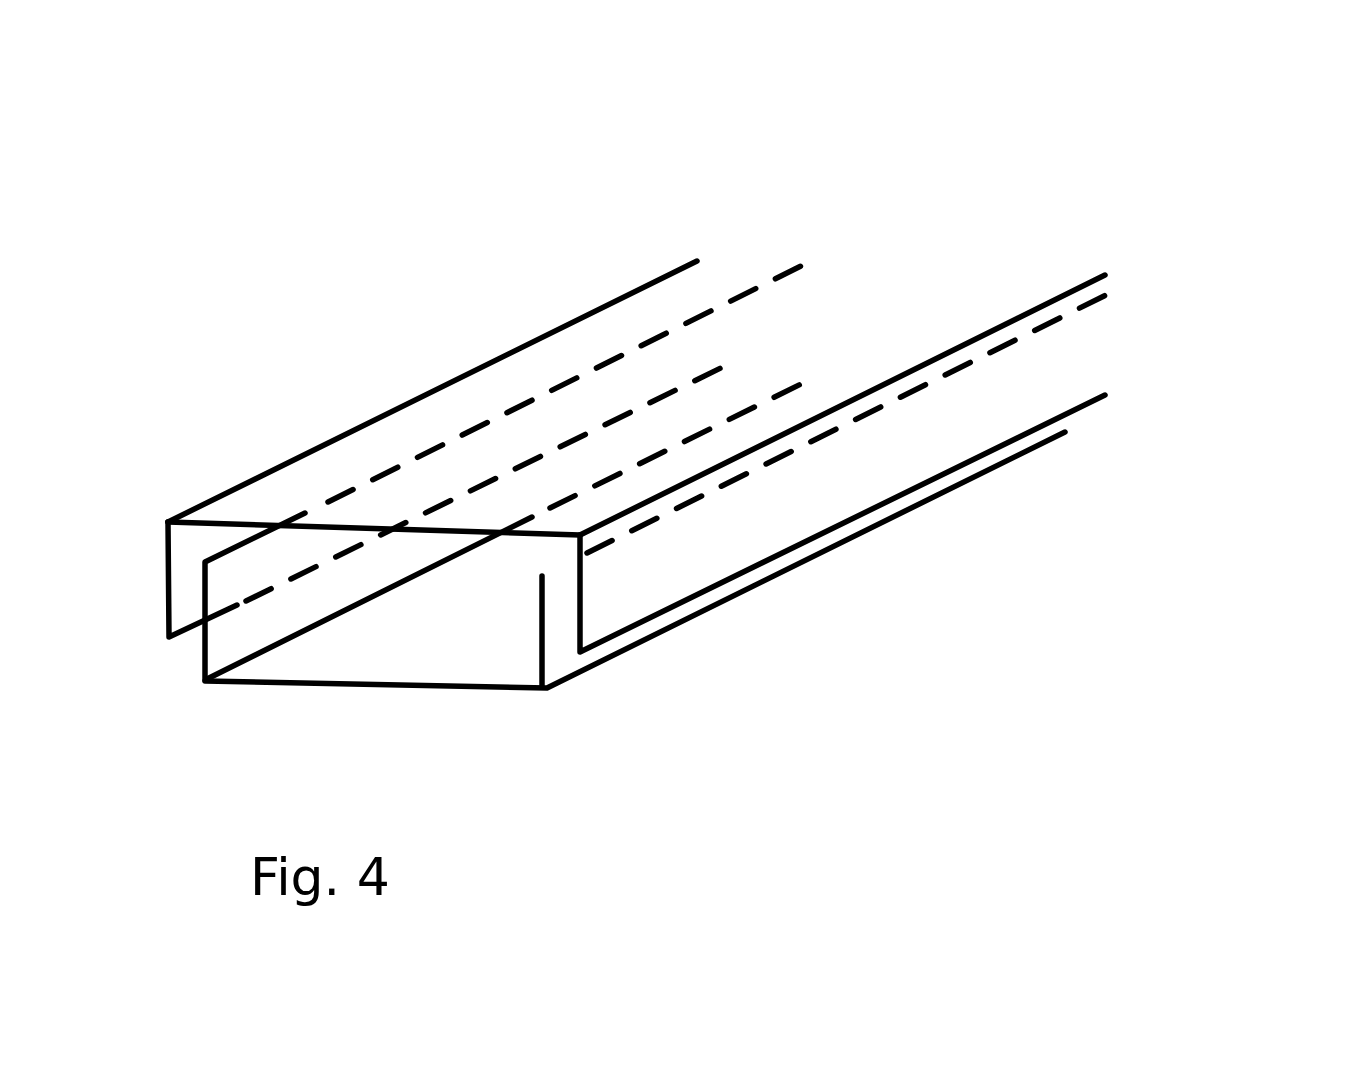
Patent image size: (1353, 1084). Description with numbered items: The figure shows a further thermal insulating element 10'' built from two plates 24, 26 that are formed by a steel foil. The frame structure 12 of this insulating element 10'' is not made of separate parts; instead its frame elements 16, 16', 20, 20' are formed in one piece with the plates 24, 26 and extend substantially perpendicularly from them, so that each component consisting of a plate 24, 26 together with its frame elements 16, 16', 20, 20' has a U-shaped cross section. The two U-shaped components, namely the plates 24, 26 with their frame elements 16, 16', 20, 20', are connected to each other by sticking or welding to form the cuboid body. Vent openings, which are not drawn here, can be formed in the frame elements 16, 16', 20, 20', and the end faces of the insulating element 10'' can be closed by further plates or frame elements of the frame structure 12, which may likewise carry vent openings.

The thermal insulating element 10'' is at (720, 449).
The frame structure 12 is at (1225, 326).
The frame element 16 is at (879, 520).
The frame element 16' is at (635, 596).
The frame element 20 is at (424, 498).
The frame element 20' is at (197, 673).
The plate 24 is at (391, 444).
The plate 26 is at (450, 656).